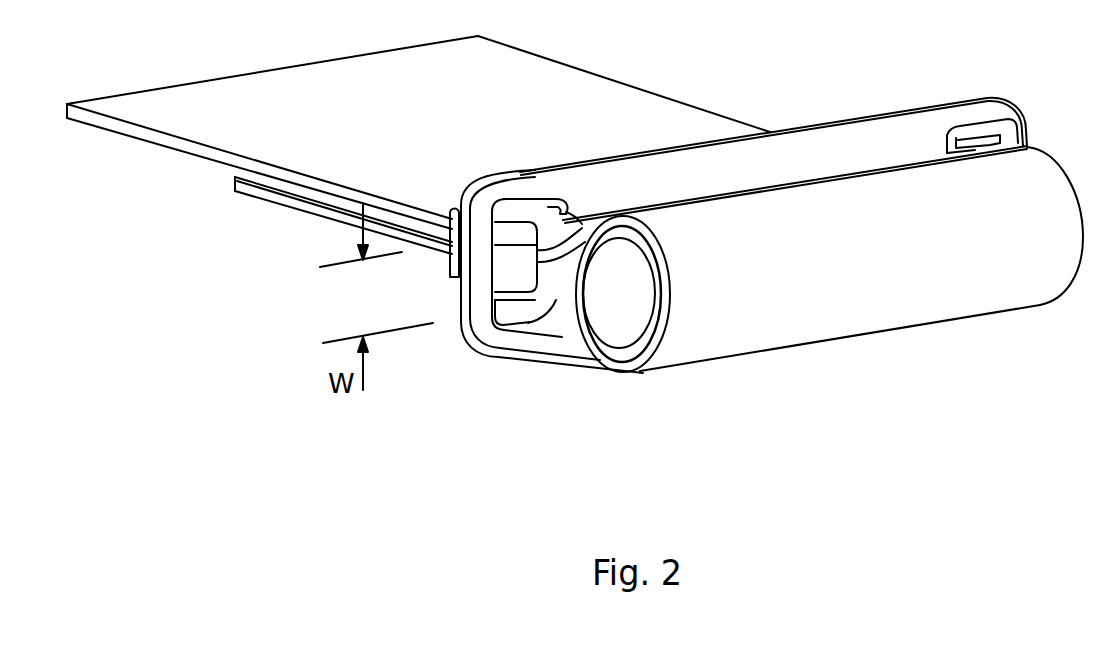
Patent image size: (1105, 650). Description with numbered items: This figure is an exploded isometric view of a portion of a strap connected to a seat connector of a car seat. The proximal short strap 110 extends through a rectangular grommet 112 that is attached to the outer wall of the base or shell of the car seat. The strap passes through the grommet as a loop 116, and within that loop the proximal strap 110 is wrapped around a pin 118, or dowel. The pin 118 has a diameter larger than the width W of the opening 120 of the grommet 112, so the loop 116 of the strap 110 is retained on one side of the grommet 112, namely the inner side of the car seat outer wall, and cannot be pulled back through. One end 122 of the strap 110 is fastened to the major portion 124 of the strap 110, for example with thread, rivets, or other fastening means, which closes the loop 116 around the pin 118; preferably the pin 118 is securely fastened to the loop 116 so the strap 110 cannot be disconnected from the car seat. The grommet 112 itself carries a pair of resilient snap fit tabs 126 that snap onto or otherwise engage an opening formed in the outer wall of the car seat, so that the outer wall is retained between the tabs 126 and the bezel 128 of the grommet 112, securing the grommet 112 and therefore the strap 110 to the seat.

The proximal short strap 110 is at (130, 132).
The grommet 112 is at (869, 94).
The loop 116 is at (1073, 285).
The pin 118 is at (638, 308).
The opening 120 is at (510, 308).
The end 122 is at (278, 204).
The major portion 124 is at (195, 160).
The resilient snap fit tabs 126 is at (448, 267).
The bezel 128 is at (1008, 100).